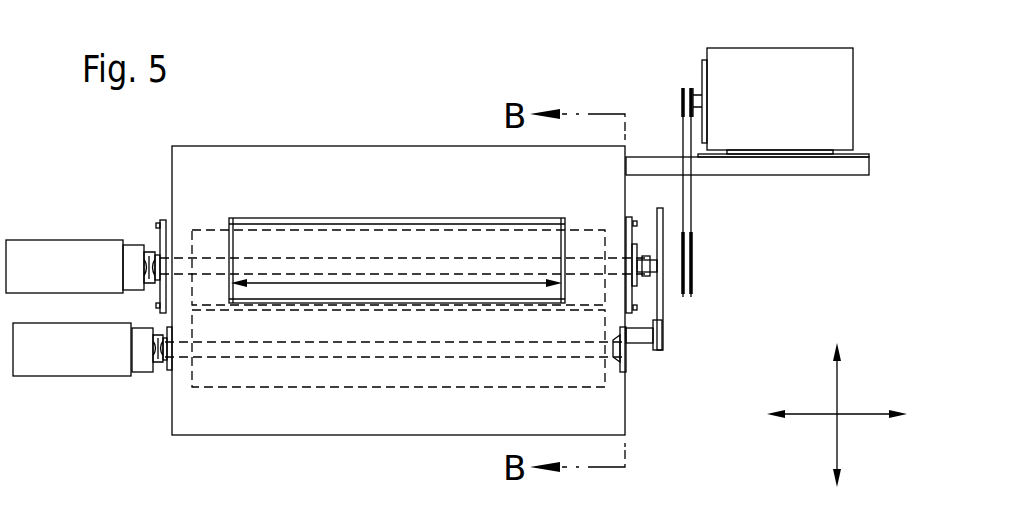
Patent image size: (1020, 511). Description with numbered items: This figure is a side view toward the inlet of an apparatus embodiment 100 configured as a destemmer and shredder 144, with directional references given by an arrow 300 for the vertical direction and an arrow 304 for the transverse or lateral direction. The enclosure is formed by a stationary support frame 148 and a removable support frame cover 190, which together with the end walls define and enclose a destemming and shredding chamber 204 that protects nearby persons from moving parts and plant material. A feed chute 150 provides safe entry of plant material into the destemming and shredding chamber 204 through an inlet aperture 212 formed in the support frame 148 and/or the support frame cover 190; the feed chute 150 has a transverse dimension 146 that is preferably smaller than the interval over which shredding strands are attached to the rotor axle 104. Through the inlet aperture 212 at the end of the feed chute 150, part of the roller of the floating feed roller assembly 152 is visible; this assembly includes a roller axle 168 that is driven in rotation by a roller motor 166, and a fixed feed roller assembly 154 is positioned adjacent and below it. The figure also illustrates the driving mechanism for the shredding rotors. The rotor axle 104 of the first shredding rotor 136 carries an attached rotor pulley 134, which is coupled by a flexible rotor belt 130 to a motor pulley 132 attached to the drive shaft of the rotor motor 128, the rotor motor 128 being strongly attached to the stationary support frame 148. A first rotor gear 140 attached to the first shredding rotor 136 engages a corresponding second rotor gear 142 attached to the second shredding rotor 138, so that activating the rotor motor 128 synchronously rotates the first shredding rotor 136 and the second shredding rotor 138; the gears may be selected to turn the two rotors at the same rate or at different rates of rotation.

The apparatus embodiment 100 is at (285, 42).
The destemmer and shredder 144 is at (418, 88).
The support frame cover 190 is at (240, 146).
The floating feed roller assembly 152 is at (206, 200).
The fixed feed roller assembly 154 is at (208, 405).
The feed chute 150 is at (330, 213).
The transverse dimension 146 is at (427, 283).
The inlet aperture 212 is at (426, 235).
The destemming and shredding chamber 204 is at (479, 235).
The first rotor gear 140 is at (655, 212).
The roller axle 168 is at (305, 257).
The roller motor 166 is at (81, 281).
The rotor motor 128 is at (836, 47).
The motor pulley 132 is at (683, 88).
The support frame 148 is at (762, 177).
The rotor belt 130 is at (691, 190).
The rotor pulley 134 is at (692, 252).
The first shredding rotor 136 is at (664, 280).
The rotor axle 104 is at (674, 280).
The second rotor gear 142 is at (663, 333).
The second shredding rotor 138 is at (632, 345).
The arrow indicating vertical direction 300 is at (838, 380).
The arrow indicating transverse direction 304 is at (852, 417).